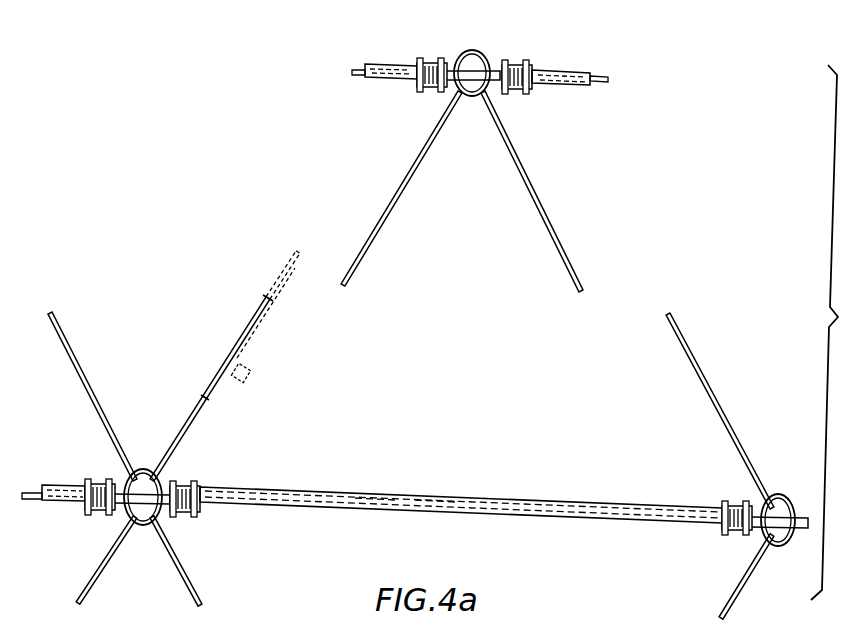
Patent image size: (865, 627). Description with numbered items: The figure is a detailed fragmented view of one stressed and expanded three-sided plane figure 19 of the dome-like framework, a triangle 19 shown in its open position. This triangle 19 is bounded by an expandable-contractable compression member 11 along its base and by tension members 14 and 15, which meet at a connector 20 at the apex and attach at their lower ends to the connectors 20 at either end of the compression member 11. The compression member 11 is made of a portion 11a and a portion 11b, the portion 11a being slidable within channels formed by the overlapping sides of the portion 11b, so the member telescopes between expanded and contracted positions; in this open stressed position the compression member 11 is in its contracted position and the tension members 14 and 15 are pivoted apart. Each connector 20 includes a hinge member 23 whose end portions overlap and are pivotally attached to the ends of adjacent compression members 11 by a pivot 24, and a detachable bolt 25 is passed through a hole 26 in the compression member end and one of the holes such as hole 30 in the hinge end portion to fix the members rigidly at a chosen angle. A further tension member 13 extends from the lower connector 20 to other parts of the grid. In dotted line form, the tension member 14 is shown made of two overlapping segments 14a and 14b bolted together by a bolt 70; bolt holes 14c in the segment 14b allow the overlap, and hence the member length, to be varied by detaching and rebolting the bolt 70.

The compression member 11 is at (400, 64).
The portion of compression member 11a is at (437, 500).
The portion of compression member 11b is at (369, 492).
The tension member 13 is at (70, 347).
The tension member 14 is at (397, 196).
The segment of tension member 14a is at (357, 262).
The segment of tension member 14b is at (216, 380).
The bolt holes 14c is at (250, 326).
The tension member 15 is at (545, 213).
The three-sided plane figure 19 is at (466, 350).
The connector 20 is at (479, 104).
The hinge member 23 is at (480, 66).
The pivot 24 is at (425, 62).
The detachable bolt 25 is at (452, 44).
The hole 26 is at (132, 474).
The hole 30 is at (115, 510).
The bolt 70 is at (246, 375).